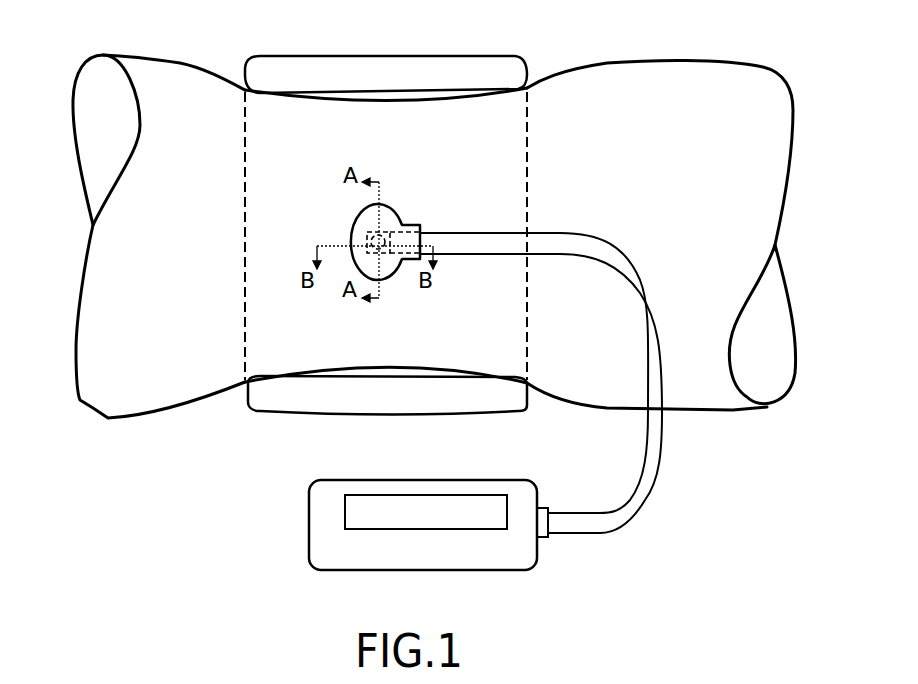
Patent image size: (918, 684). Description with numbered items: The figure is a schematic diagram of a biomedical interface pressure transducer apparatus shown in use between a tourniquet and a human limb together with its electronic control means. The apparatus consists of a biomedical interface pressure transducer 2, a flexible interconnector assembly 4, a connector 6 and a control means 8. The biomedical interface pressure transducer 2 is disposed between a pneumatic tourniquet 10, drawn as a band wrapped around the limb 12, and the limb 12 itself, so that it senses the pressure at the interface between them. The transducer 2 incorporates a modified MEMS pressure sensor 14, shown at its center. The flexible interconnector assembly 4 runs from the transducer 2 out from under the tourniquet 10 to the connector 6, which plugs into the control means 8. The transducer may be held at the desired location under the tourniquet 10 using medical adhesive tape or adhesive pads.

The biomedical interface pressure transducer 2 is at (403, 220).
The flexible interconnector assembly 4 is at (564, 233).
The connector 6 is at (545, 508).
The control means 8 is at (348, 480).
The pneumatic tourniquet 10 is at (473, 58).
The limb 12 is at (628, 62).
The modified MEMS pressure sensor 14 is at (362, 244).